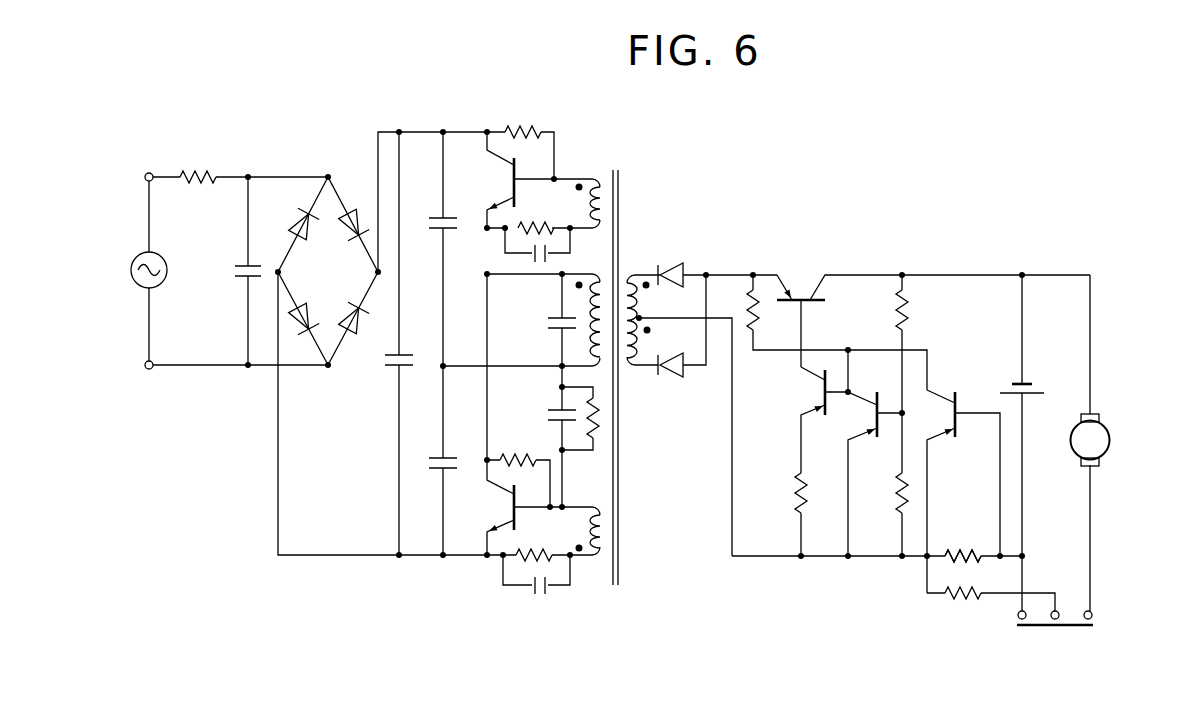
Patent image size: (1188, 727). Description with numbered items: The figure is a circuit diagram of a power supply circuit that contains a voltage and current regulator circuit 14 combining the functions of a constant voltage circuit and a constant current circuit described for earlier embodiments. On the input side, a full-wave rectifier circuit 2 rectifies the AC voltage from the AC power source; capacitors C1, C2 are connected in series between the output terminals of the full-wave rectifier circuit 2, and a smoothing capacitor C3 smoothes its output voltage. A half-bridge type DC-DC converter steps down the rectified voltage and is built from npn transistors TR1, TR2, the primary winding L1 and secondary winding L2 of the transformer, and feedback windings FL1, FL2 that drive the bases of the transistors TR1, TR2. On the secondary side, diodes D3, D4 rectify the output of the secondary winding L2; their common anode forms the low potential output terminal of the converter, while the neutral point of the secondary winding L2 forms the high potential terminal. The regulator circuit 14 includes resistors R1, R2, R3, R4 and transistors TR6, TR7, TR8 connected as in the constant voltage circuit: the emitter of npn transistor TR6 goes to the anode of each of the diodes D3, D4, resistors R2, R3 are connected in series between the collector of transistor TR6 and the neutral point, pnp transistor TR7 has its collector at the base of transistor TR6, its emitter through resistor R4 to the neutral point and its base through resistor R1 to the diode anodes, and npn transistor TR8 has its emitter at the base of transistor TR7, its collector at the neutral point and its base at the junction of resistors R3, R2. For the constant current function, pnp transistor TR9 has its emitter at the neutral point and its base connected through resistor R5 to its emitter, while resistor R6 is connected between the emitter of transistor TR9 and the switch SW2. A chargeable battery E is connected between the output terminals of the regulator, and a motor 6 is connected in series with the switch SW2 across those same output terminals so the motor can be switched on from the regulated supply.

The full-wave rectifier circuit 2 is at (310, 192).
The capacitor C1 is at (430, 225).
The capacitor C2 is at (430, 467).
The smoothing capacitor C3 is at (390, 368).
The npn transistor TR1 is at (503, 176).
The npn transistor TR2 is at (503, 510).
The feedback winding FL1 is at (597, 176).
The feedback winding FL2 is at (592, 568).
The primary winding L1 is at (586, 307).
The secondary winding L2 is at (656, 362).
The diode D3 is at (670, 265).
The diode D4 is at (688, 376).
The resistor R1 is at (748, 308).
The voltage and current regulator circuit 14 is at (795, 260).
The npn transistor TR6 is at (802, 284).
The pnp transistor TR7 is at (817, 394).
The npn transistor TR8 is at (866, 398).
The pnp transistor TR9 is at (945, 398).
The resistor R2 is at (908, 312).
The resistor R3 is at (898, 502).
The resistor R4 is at (797, 500).
The resistor R5 is at (960, 556).
The resistor R6 is at (962, 600).
The chargeable battery E is at (1028, 390).
The motor 6 is at (1111, 442).
The switch SW2 is at (1071, 628).